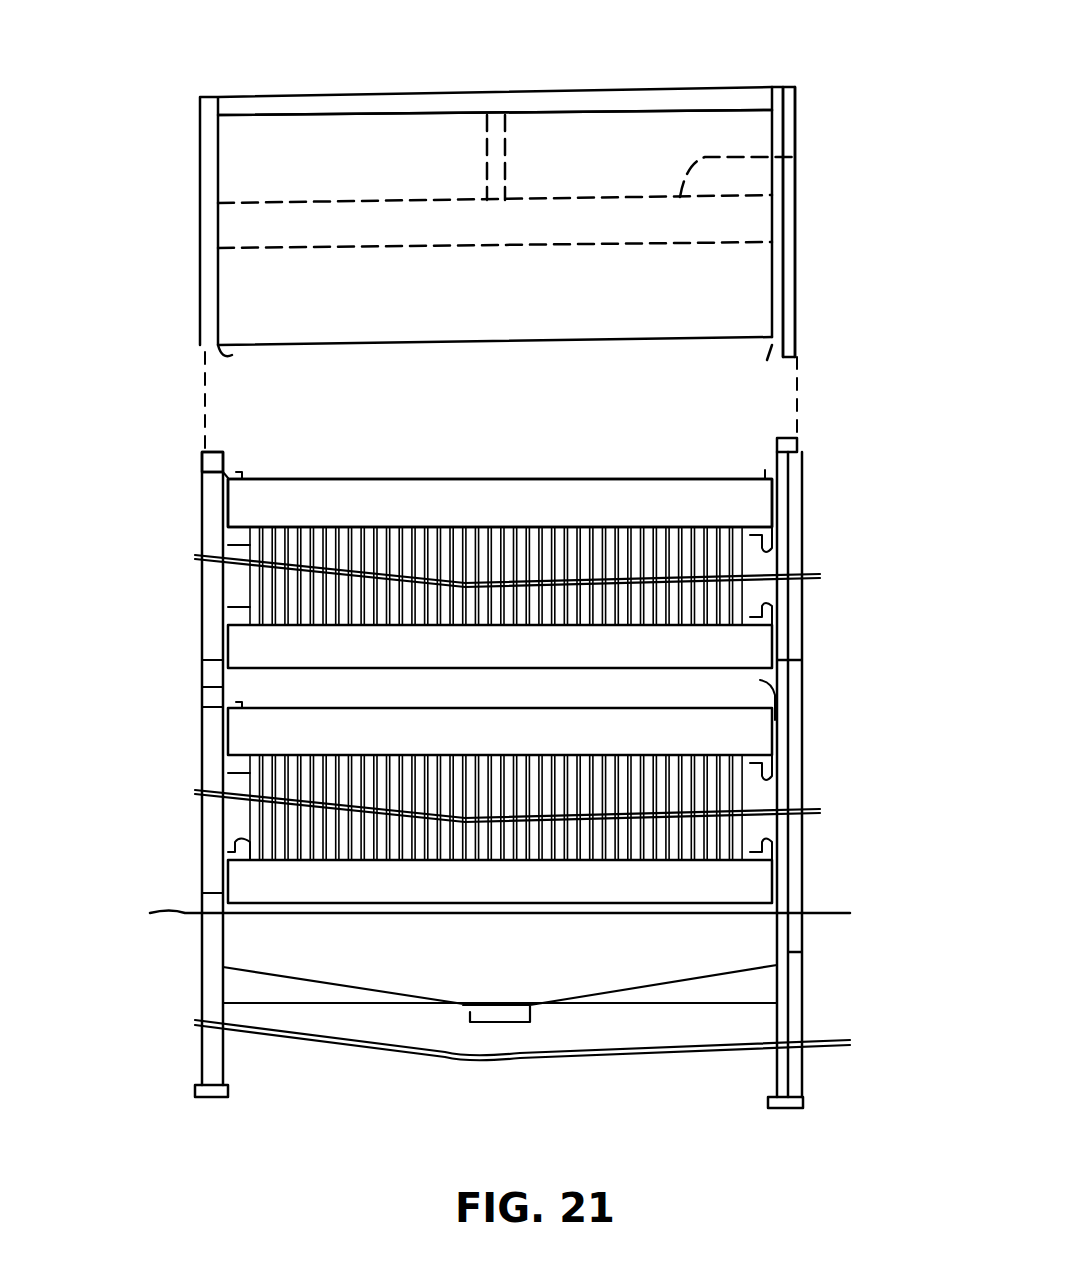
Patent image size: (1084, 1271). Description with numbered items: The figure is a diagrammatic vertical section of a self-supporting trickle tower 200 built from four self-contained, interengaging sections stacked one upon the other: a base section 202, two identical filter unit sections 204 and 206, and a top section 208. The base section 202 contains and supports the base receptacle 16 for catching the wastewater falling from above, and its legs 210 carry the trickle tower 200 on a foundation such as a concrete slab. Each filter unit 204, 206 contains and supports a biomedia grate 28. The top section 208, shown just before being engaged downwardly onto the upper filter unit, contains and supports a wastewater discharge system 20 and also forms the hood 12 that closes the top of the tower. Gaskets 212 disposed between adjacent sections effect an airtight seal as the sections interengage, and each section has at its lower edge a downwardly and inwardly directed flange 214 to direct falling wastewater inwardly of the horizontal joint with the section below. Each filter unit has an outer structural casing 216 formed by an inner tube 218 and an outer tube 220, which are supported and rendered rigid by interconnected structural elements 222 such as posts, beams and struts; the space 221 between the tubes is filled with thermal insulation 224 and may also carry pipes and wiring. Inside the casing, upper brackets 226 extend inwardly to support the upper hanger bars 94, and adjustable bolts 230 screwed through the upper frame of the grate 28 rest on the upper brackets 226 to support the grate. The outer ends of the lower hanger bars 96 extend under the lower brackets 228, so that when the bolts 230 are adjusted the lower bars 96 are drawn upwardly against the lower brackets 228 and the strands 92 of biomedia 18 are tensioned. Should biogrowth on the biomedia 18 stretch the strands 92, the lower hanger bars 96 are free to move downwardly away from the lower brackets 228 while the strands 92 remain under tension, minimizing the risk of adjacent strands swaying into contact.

The top section 208 is at (283, 80).
The thermal insulation 224 is at (530, 100).
The trickle tower 200 is at (158, 222).
The wastewater discharge system 20 is at (796, 154).
The hood 12 is at (805, 305).
The flange 214 is at (232, 355).
The outer structural casing 216 is at (782, 420).
The gaskets 212 is at (222, 452).
The inner tube 218 is at (240, 478).
The upper hanger bars 94 is at (462, 490).
The biomedia grate 28 is at (553, 455).
The adjustable bolts 230 is at (765, 470).
The outer tube 220 is at (200, 462).
The space 221 is at (212, 510).
The structural elements 222 is at (800, 503).
The upper brackets 226 is at (770, 557).
The filter unit section 206 is at (178, 580).
The biomedia 18 is at (780, 596).
The lower brackets 228 is at (775, 610).
The lower hanger bars 96 is at (455, 670).
The filter unit section 204 is at (175, 785).
The strands 92 is at (775, 798).
The base section 202 is at (180, 978).
The base receptacle 16 is at (720, 975).
The legs 210 is at (200, 1055).